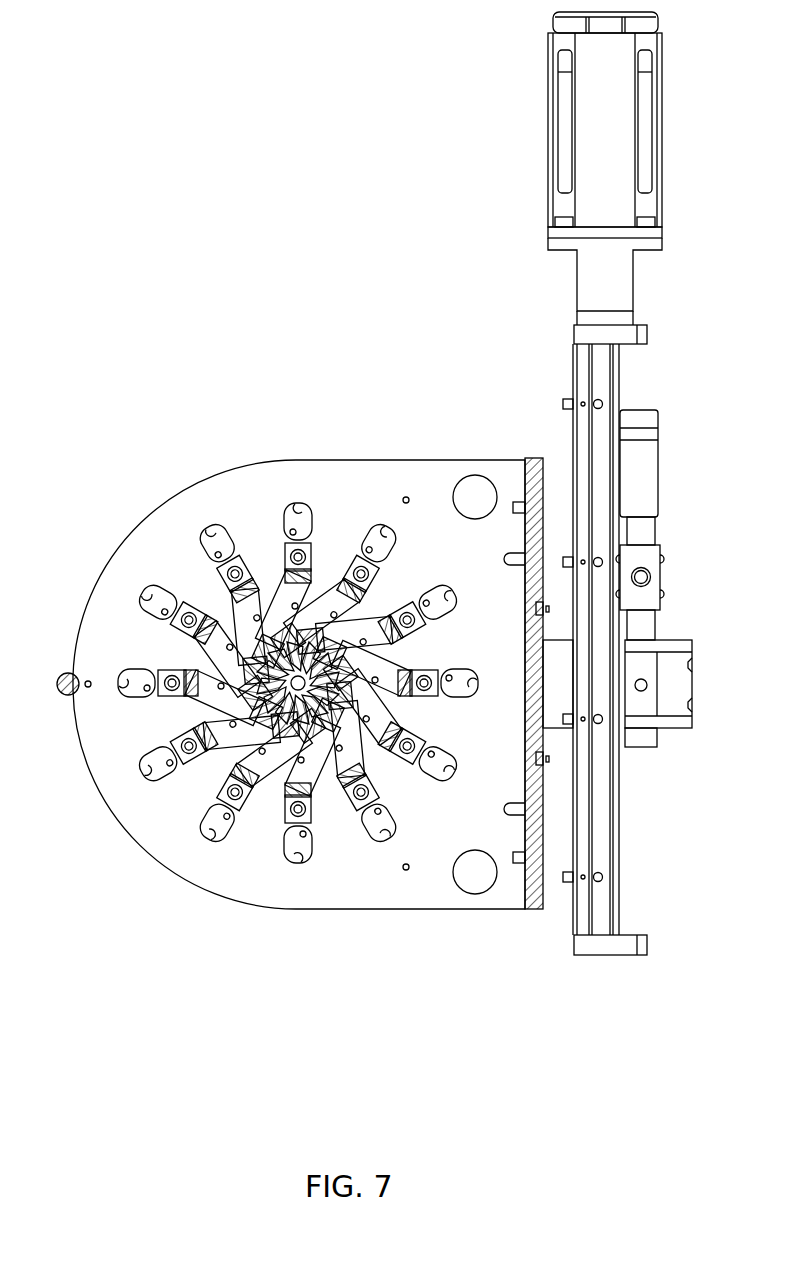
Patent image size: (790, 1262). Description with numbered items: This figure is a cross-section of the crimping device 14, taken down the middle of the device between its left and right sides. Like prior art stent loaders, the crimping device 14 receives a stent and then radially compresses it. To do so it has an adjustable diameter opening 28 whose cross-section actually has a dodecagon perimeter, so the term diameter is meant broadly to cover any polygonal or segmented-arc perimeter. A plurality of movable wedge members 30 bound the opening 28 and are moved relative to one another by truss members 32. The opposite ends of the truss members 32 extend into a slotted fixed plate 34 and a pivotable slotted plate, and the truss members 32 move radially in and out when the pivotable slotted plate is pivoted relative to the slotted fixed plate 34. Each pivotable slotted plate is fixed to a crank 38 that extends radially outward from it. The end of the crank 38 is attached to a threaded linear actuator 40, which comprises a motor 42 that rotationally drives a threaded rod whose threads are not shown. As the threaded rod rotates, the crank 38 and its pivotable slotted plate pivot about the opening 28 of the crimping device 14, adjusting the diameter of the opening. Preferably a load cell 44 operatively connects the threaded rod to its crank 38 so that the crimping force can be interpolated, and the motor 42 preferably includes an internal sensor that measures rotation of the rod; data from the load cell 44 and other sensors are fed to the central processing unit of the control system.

The crimping device 14 is at (208, 86).
The adjustable diameter opening 28 is at (262, 648).
The movable wedge members 30 is at (343, 603).
The truss members 32 is at (225, 700).
The slotted fixed plate 34 is at (367, 477).
The crank 38 is at (555, 668).
The threaded linear actuator 40 is at (603, 383).
The motor 42 is at (615, 148).
The load cell 44 is at (640, 555).